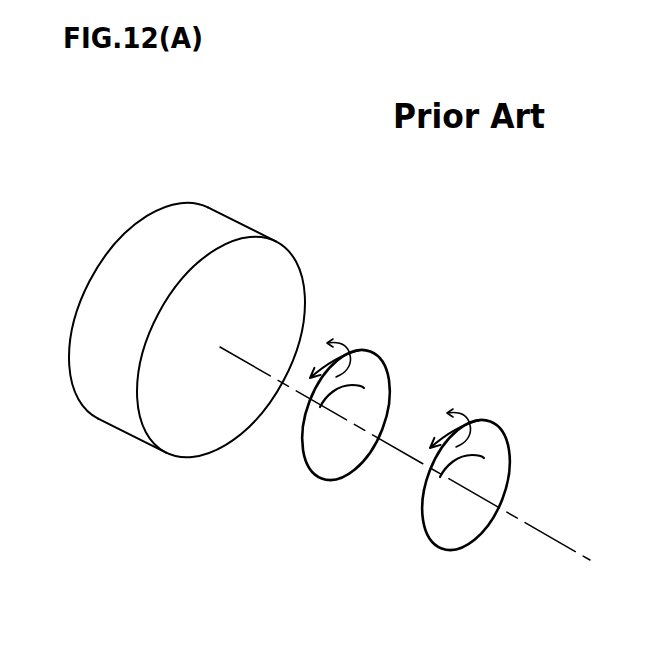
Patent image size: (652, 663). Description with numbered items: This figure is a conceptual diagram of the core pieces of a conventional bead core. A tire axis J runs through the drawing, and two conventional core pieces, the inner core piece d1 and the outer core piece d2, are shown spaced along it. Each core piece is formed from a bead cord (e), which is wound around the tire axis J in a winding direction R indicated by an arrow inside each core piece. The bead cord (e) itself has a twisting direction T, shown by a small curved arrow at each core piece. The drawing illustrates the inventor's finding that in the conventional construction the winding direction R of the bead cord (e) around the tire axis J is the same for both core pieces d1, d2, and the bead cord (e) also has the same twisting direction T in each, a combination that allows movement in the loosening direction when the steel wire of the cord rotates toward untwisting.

The tire axis J is at (563, 541).
The bead cord e is at (406, 474).
The winding direction R is at (438, 384).
The twisting direction T is at (412, 351).
The inner core piece d1 is at (295, 461).
The outer core piece d2 is at (416, 531).